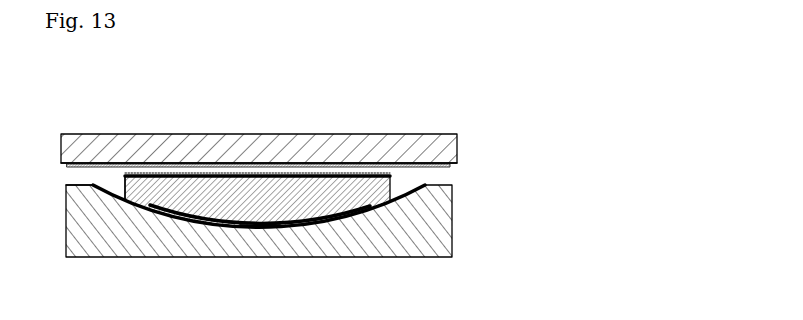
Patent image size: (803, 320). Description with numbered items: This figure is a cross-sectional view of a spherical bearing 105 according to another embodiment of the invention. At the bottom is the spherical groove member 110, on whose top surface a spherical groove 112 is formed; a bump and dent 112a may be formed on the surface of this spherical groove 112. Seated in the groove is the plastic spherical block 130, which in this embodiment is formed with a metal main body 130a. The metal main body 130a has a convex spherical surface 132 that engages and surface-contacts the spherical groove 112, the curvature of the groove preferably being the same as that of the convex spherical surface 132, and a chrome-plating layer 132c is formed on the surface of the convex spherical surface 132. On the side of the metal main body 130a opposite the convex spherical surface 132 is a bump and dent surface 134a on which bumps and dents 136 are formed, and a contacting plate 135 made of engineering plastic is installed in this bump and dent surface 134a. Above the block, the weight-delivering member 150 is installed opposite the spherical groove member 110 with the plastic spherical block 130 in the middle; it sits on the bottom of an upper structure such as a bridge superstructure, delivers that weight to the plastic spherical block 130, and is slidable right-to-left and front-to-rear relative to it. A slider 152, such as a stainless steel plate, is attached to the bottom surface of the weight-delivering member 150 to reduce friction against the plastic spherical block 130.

The bearing assembly 105 is at (398, 111).
The spherical groove member 110 is at (428, 236).
The spherical groove 112 is at (346, 216).
The bump and dent 112a is at (112, 191).
The plastic spherical block 130 is at (220, 191).
The metal main body 130a is at (183, 221).
The convex spherical surface 132 is at (302, 226).
The chrome-plating layer 132c is at (254, 230).
The bump and dent surface 134a is at (350, 172).
The contacting plate 135 is at (284, 160).
The bumps and dents 136 is at (133, 174).
The weight-delivering member 150 is at (438, 149).
The slider 152 is at (70, 166).